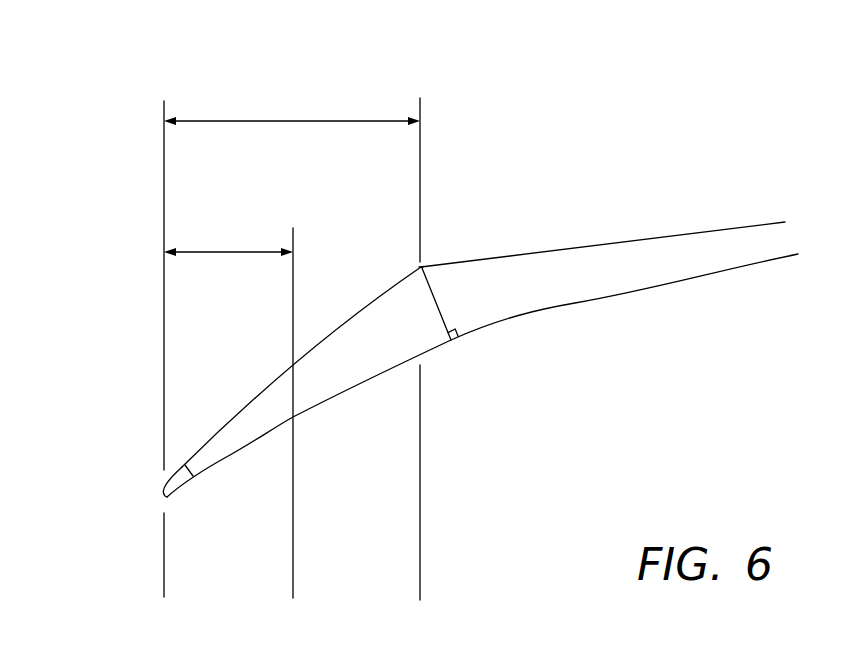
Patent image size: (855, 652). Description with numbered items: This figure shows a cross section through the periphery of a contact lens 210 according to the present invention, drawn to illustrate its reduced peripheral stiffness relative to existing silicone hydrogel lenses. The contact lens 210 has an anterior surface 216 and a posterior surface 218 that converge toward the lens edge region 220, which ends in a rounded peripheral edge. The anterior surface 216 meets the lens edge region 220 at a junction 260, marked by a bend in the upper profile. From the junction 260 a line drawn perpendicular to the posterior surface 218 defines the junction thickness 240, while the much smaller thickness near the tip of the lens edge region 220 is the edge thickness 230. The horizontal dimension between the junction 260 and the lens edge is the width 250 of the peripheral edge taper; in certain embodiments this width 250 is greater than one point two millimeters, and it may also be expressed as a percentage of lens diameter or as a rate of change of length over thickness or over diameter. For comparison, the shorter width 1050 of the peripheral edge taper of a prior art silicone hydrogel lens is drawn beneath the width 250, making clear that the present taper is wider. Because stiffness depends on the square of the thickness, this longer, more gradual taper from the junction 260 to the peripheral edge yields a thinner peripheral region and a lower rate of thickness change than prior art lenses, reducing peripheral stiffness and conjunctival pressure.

The contact lens 210 is at (660, 183).
The anterior surface 216 is at (498, 253).
The posterior surface 218 is at (575, 303).
The lens edge region 220 is at (194, 426).
The edge thickness 230 is at (207, 467).
The junction thickness 240 is at (436, 303).
The width 250 is at (222, 119).
The junction 260 is at (422, 262).
The width 1050 is at (213, 250).